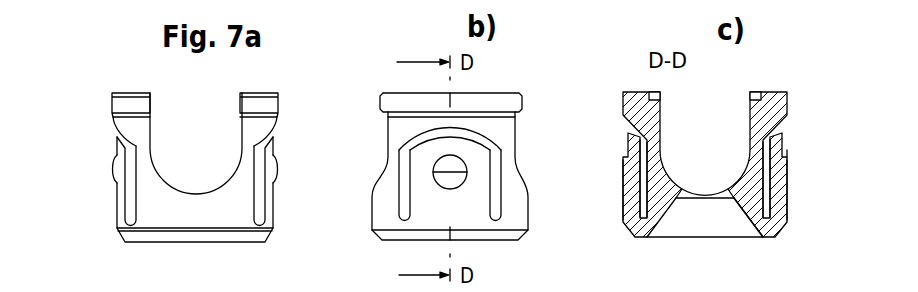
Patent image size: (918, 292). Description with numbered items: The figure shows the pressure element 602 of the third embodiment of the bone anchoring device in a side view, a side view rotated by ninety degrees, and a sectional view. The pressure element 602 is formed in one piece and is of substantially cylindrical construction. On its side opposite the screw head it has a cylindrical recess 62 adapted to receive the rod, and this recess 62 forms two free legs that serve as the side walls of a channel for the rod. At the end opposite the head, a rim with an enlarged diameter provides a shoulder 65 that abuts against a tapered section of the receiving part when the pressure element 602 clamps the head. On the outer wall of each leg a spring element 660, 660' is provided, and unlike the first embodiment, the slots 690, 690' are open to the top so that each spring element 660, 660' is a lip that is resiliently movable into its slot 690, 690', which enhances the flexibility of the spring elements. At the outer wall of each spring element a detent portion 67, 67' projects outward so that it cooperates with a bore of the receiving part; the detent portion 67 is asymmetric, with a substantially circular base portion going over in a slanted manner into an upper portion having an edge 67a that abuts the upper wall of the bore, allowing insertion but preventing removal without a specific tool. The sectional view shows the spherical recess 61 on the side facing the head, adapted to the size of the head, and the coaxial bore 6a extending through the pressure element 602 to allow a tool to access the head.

In FIG. 7a, the pressure element 602 is at (150, 83).
In FIG. 7b, the pressure element 602 is at (377, 88).
In FIG. 7c, the pressure element 602 is at (625, 88).
In FIG. 7a, the cylindrical recess 62 is at (237, 125).
In FIG. 7c, the cylindrical recess 62 is at (747, 123).
In FIG. 7a, the shoulder 65 is at (117, 117).
In FIG. 7a, the detent portion 67 is at (88, 168).
In FIG. 7b, the detent portion 67 is at (482, 222).
In FIG. 7a, the detent portion 67' is at (305, 168).
In FIG. 7b, the edge 67a is at (465, 165).
In FIG. 7c, the edge 67a is at (828, 139).
In FIG. 7a, the slot 690 is at (98, 192).
In FIG. 7b, the slot 690 is at (413, 167).
In FIG. 7c, the slot 690 is at (607, 189).
In FIG. 7a, the slot 690' is at (293, 192).
In FIG. 7c, the slot 690' is at (807, 188).
In FIG. 7c, the spring element 660 is at (593, 190).
In FIG. 7c, the spring element 660' is at (816, 190).
In FIG. 7c, the coaxial bore 6a is at (683, 198).
In FIG. 7c, the spherical recess 61 is at (750, 212).